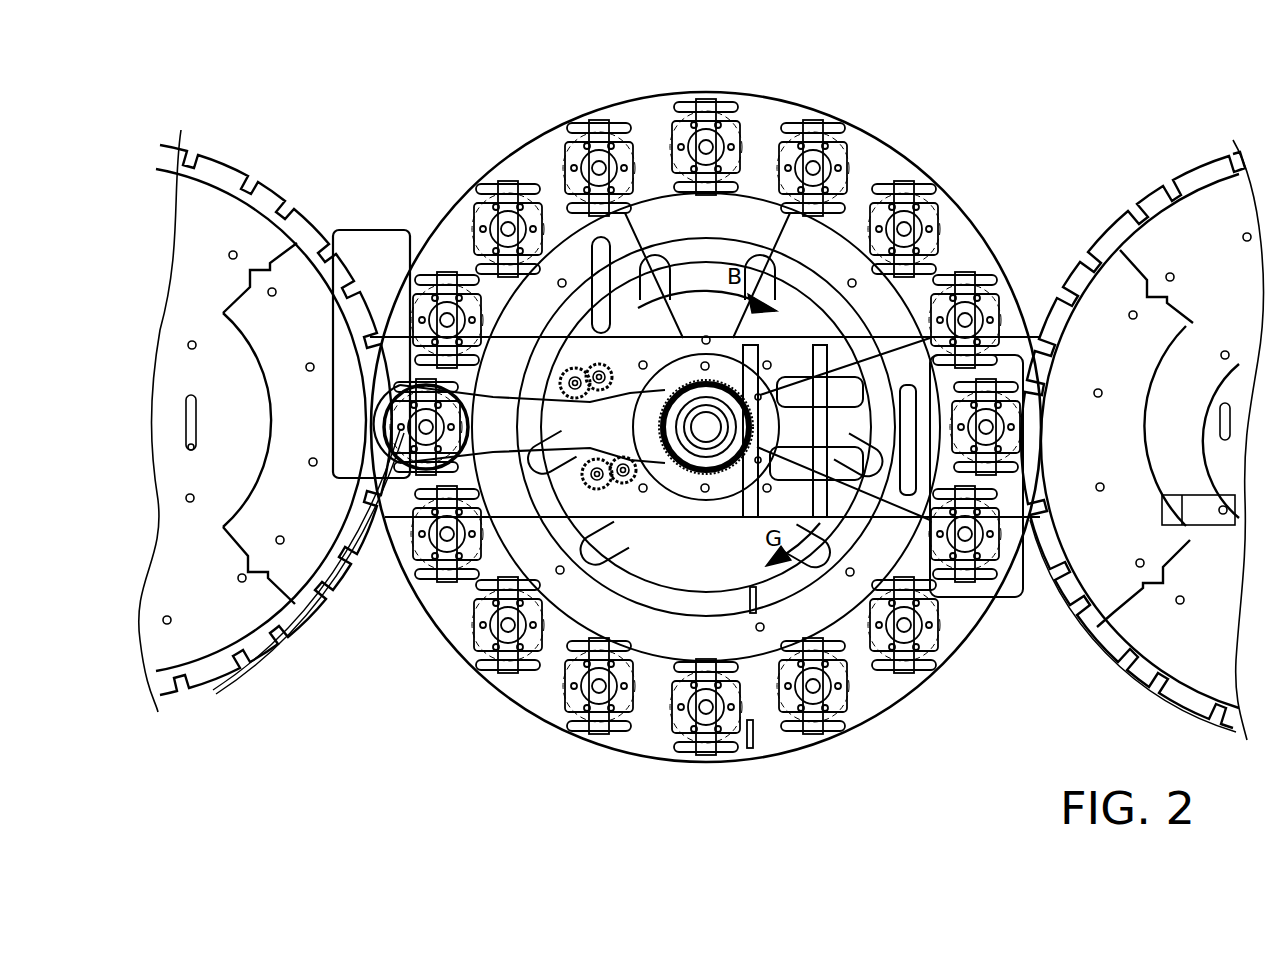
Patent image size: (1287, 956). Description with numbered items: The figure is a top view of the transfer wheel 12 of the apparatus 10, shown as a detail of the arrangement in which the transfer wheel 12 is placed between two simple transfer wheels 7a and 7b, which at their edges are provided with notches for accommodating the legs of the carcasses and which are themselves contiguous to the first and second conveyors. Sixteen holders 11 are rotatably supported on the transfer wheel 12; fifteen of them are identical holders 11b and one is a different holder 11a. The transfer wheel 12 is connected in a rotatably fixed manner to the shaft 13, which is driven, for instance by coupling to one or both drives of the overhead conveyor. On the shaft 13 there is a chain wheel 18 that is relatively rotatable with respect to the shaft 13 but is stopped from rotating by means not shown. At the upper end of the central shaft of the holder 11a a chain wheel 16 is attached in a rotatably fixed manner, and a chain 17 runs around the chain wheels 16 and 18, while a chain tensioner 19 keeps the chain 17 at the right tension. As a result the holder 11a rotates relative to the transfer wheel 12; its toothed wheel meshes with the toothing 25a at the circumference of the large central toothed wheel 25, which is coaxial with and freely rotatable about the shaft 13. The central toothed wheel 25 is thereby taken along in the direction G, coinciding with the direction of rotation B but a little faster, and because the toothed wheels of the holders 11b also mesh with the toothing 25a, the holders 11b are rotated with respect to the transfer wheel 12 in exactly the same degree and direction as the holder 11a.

The transfer wheel 7a is at (247, 220).
The transfer wheel 7b is at (1133, 250).
The mounting head assembly 10 is at (940, 132).
The holders 11 is at (950, 590).
The holder 11a is at (418, 470).
The holders 11b is at (490, 665).
The transfer wheel 12 is at (868, 160).
The shaft 13 is at (707, 425).
The chain wheel 16 is at (385, 395).
The chain 17 is at (555, 470).
The chain wheel 18 is at (703, 470).
The chain tensioner 19 is at (610, 360).
The central toothed wheel 25 is at (917, 300).
The toothing 25a is at (840, 615).